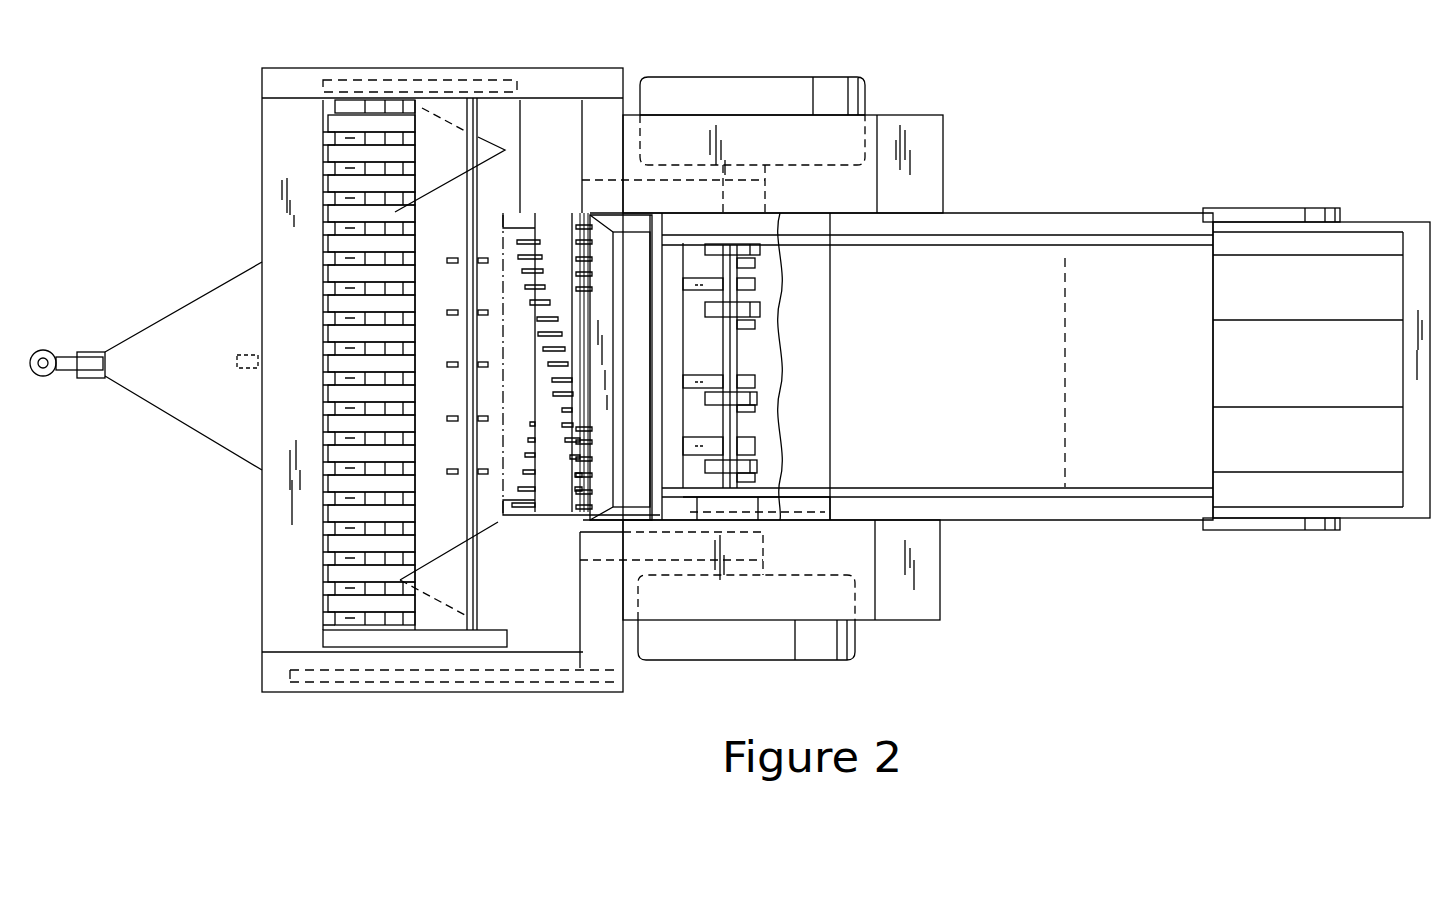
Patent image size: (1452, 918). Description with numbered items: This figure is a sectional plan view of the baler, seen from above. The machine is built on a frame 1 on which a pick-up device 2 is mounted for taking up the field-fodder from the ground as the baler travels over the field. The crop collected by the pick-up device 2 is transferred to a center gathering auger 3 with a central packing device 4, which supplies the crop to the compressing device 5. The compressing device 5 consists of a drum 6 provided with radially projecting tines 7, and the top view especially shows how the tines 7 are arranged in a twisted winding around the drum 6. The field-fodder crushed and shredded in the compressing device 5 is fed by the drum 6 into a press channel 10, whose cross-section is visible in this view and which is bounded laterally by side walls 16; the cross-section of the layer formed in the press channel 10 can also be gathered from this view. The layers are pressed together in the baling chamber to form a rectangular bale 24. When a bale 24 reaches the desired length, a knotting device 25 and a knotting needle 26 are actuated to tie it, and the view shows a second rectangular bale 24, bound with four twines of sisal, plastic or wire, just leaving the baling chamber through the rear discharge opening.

The frame 1 is at (183, 335).
The pick-up device 2 is at (323, 238).
The center gathering auger 3 is at (435, 146).
The central packing device 4 is at (433, 437).
The compressing device 5 is at (533, 205).
The drum 6 is at (548, 300).
The tines 7 is at (553, 235).
The press channel 10 is at (638, 358).
The side walls 16 is at (635, 232).
The rectangular bale 24 is at (1017, 262).
The knotting device 25 is at (760, 463).
The knotting needle 26 is at (757, 325).